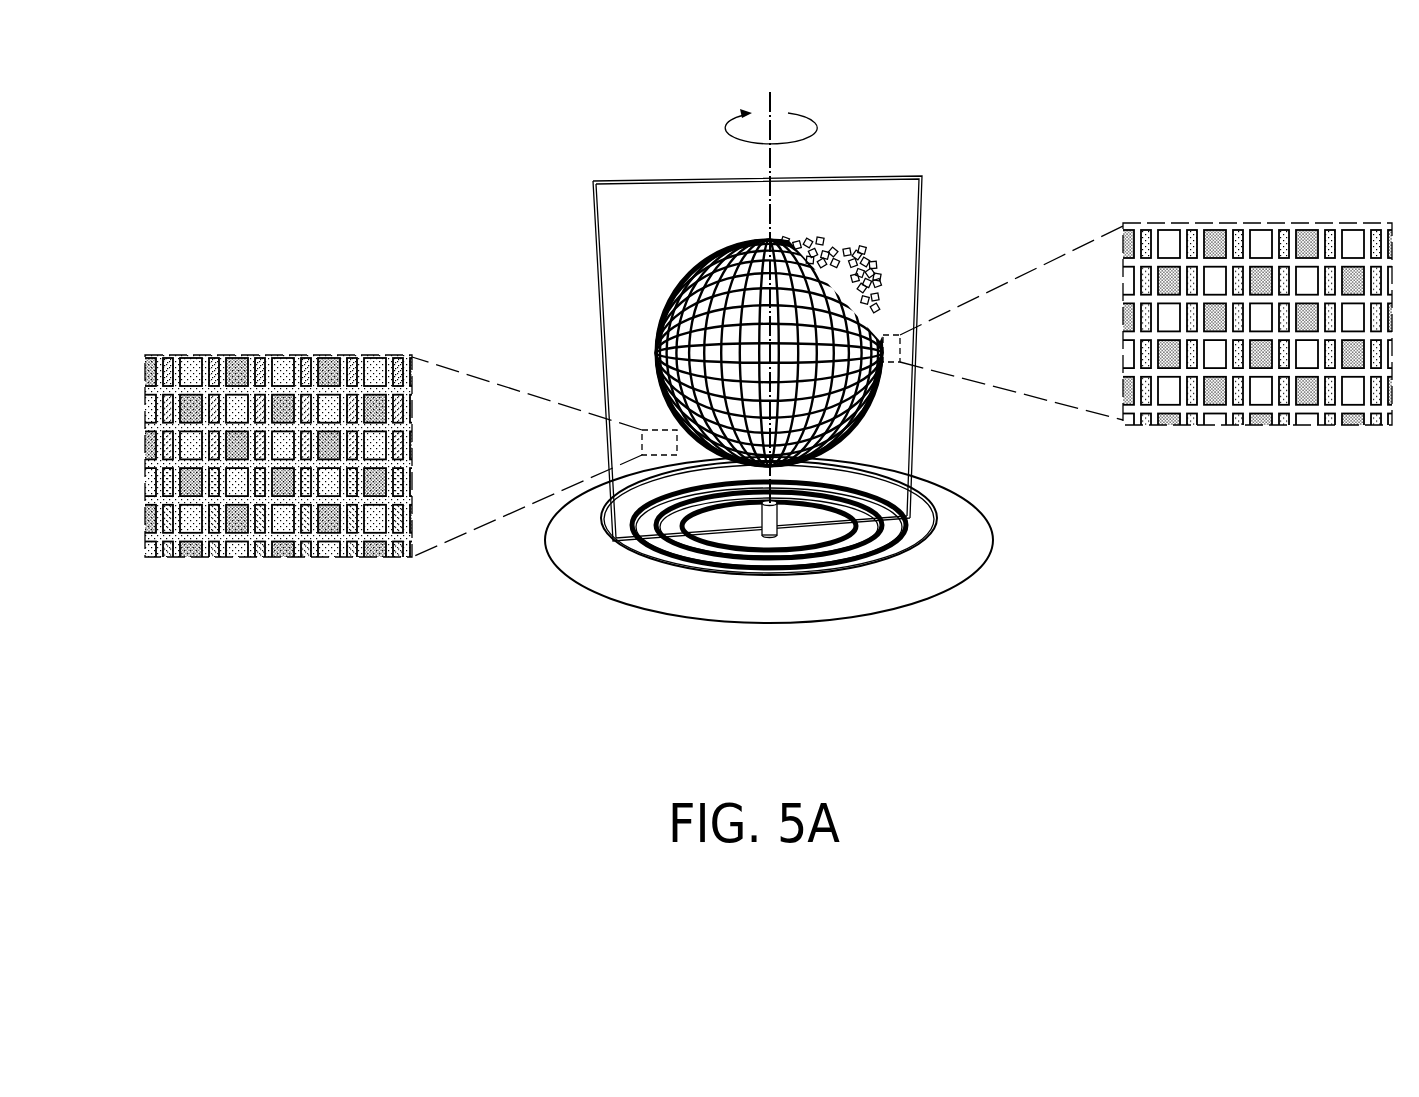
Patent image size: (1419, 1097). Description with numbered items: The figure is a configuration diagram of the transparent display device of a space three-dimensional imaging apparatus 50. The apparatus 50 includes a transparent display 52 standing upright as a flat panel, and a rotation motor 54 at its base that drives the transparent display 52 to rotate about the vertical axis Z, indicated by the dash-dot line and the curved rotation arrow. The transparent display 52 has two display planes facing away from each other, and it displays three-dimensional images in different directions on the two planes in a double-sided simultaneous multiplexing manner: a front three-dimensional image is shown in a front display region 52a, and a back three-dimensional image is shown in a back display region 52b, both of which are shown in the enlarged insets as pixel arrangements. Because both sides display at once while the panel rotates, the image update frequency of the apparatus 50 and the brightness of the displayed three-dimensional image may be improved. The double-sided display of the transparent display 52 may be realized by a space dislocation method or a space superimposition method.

The space three-dimensional imaging apparatus 50 is at (872, 406).
The transparent display 52 is at (888, 176).
The front display region 52a is at (1288, 223).
The back display region 52b is at (222, 355).
The rotation motor 54 is at (777, 622).